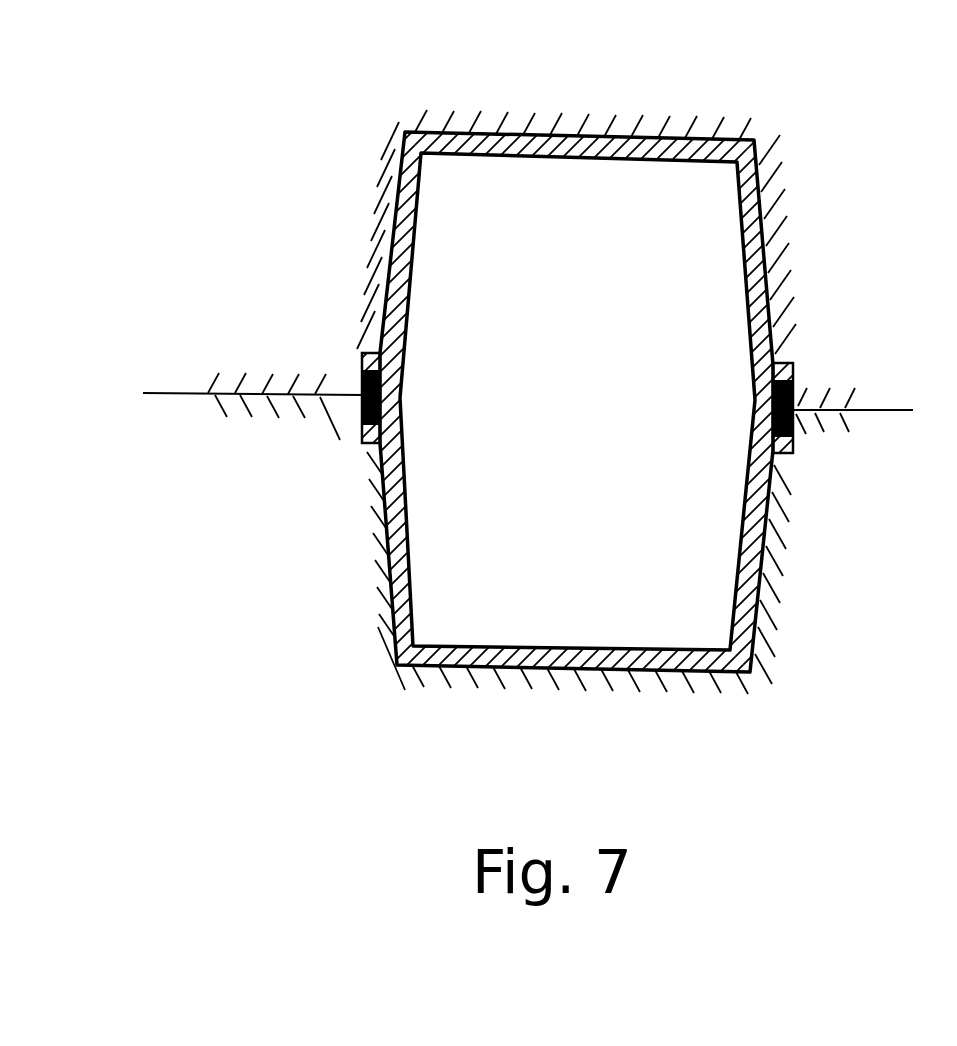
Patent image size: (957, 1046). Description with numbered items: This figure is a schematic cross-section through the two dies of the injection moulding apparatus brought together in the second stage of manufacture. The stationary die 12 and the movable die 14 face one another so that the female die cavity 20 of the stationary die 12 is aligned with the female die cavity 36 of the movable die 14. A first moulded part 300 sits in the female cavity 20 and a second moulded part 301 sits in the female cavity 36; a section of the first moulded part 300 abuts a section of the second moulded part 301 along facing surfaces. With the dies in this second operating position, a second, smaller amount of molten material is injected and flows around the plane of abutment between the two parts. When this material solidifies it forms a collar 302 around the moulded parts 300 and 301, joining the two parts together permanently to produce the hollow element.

The female die cavity 20 is at (600, 133).
The female die cavity 36 is at (650, 672).
The first moulded part 300 is at (412, 250).
The second moulded part 301 is at (405, 512).
The collar 302 is at (362, 393).
The stationary die 12 is at (881, 341).
The movable die 14 is at (886, 513).